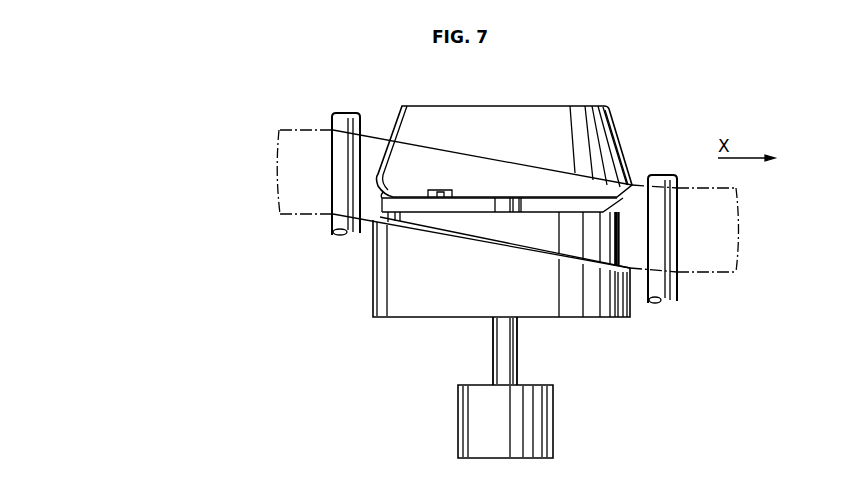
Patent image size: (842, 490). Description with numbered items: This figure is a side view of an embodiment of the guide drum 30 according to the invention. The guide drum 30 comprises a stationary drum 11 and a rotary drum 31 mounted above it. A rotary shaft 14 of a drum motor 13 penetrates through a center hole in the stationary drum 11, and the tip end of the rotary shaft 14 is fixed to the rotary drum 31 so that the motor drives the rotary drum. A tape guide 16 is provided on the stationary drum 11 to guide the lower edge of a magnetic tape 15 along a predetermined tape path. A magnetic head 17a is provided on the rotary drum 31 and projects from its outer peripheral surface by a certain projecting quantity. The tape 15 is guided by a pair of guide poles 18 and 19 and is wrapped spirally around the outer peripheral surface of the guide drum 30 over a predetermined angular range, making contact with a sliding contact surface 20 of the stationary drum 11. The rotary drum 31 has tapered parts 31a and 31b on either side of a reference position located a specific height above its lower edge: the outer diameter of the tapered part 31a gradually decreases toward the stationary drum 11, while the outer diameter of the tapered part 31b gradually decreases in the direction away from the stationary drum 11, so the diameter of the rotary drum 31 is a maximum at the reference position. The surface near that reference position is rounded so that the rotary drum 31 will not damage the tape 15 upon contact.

The stationary drum 11 is at (415, 308).
The drum motor 13 is at (472, 423).
The rotary shaft 14 is at (493, 350).
The magnetic tape 15 is at (323, 128).
The tape guide 16 is at (538, 250).
The magnetic head 17a is at (440, 190).
The guide pole 18 is at (333, 231).
The guide pole 19 is at (677, 293).
The sliding contact surface 20 is at (597, 223).
The guide drum 30 is at (489, 167).
The rotary drum 31 is at (578, 122).
The tapered part 31a is at (381, 198).
The tapered part 31b is at (610, 120).